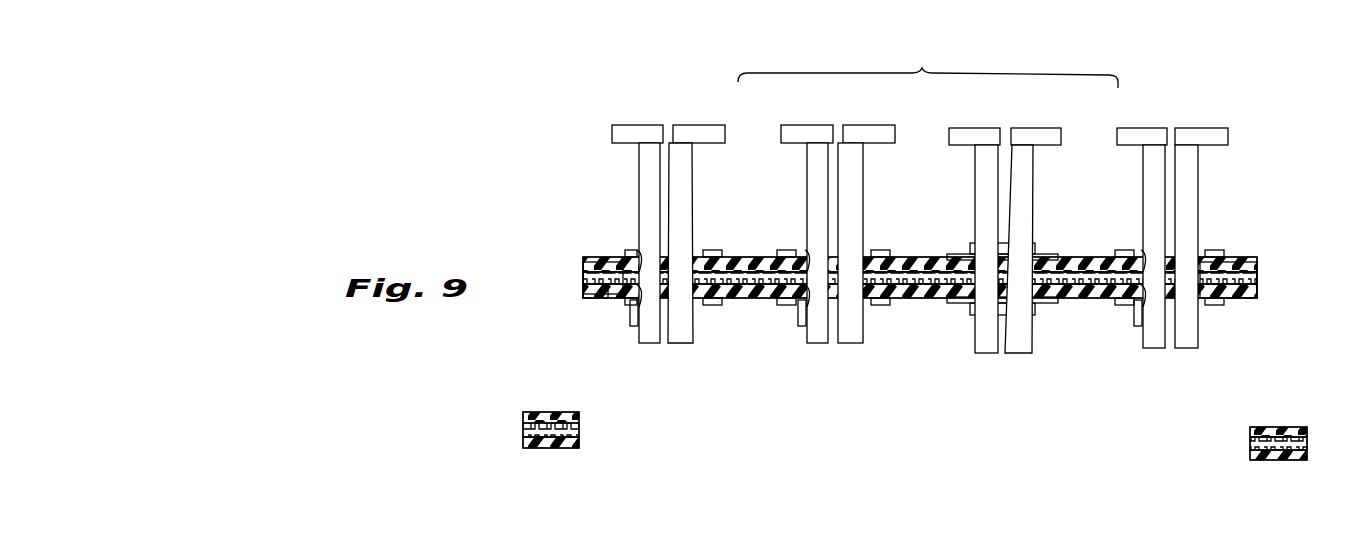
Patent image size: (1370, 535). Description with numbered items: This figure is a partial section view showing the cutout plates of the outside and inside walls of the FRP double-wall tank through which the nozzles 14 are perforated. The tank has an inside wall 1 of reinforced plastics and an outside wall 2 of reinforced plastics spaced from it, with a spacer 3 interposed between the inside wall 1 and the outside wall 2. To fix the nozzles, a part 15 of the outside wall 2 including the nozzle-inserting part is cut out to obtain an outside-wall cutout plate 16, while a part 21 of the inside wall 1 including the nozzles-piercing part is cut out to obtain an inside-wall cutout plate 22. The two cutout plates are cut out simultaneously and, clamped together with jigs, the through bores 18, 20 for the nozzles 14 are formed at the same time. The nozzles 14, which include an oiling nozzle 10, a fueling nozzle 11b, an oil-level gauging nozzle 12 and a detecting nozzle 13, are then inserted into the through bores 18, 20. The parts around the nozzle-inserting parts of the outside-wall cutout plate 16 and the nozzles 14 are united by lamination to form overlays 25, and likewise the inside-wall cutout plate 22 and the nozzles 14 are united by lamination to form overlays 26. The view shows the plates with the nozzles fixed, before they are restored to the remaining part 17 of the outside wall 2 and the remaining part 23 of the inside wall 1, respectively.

The inside wall 1 is at (1282, 455).
The outside wall 2 is at (1285, 432).
The spacer 3 is at (1312, 442).
The oiling nozzle 10 is at (817, 137).
The fueling nozzle 11b is at (975, 137).
The oil-level gauging nozzle 12 is at (1133, 137).
The detecting nozzle 13 is at (708, 135).
The nozzles 14 is at (928, 60).
The part of the outside wall 15 is at (1262, 262).
The outside-wall cutout plate 16 is at (600, 255).
The remaining part of the outside wall 17 is at (593, 418).
The through bore 18 is at (638, 245).
The through bore 20 is at (637, 326).
The part of the inside wall 21 is at (1250, 302).
The inside-wall cutout plate 22 is at (595, 300).
The remaining part of the inside wall 23 is at (607, 447).
The overlays 25 is at (955, 252).
The overlays 26 is at (782, 302).